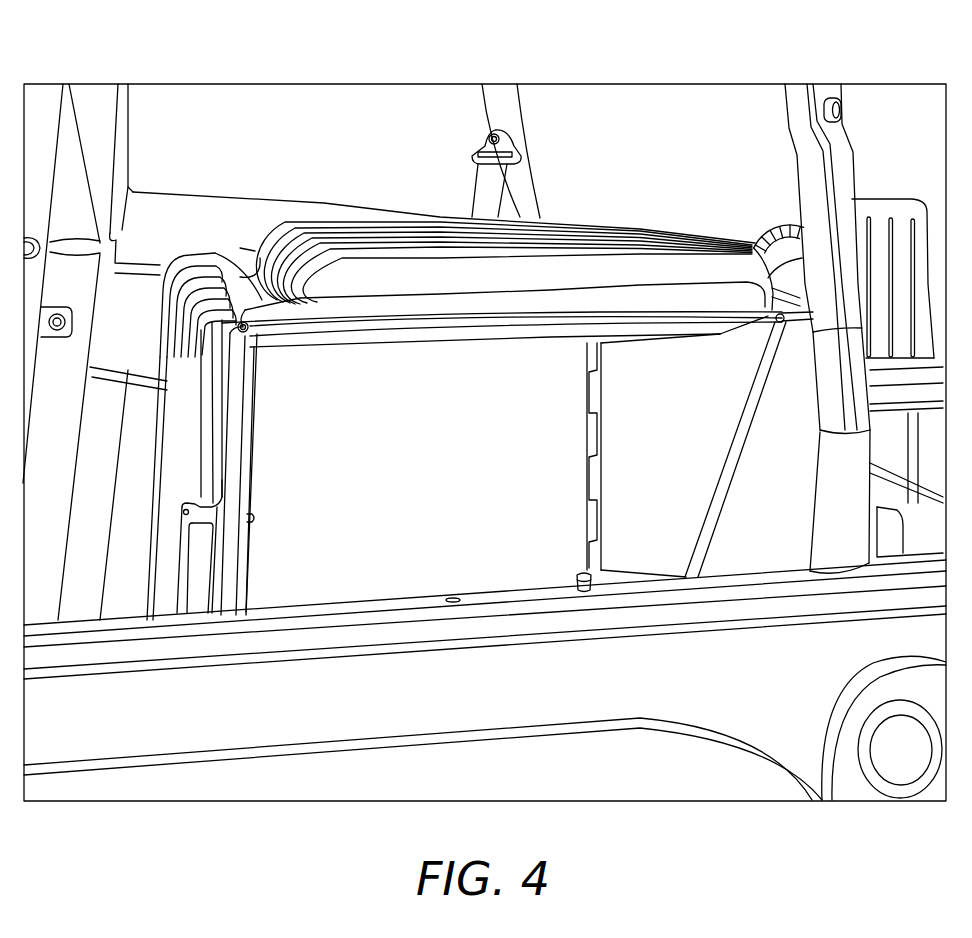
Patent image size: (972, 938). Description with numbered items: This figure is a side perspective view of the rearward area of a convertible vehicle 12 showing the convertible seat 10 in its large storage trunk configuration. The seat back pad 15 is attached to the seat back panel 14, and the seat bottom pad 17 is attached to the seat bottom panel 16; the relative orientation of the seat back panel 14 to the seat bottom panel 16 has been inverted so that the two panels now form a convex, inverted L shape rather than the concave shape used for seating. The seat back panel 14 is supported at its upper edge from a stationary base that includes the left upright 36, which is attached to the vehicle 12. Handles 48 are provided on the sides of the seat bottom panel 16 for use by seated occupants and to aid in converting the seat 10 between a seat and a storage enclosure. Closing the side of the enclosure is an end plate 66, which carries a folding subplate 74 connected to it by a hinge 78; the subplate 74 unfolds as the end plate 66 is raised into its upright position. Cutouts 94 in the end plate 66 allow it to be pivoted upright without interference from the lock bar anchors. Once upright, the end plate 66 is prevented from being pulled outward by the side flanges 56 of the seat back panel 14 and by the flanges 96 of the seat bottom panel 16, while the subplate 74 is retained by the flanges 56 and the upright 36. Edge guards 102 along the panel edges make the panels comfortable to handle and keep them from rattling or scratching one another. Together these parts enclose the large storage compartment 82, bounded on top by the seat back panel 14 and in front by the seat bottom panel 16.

The convertible seat 10 is at (205, 68).
The convertible vehicle 12 is at (99, 738).
The seat back panel 14 is at (533, 338).
The seat back pad 15 is at (441, 296).
The seat bottom panel 16 is at (231, 443).
The seat bottom pad 17 is at (203, 462).
The left upright 36 is at (744, 533).
The handles 48 is at (180, 561).
The side flanges 56 is at (728, 338).
The end plate 66 is at (399, 501).
The subplate 74 is at (647, 474).
The hinge 78 is at (586, 467).
The large storage compartment 82 is at (640, 70).
The cutouts 94 is at (255, 518).
The flanges 96 is at (244, 410).
The edge guards 102 is at (359, 338).